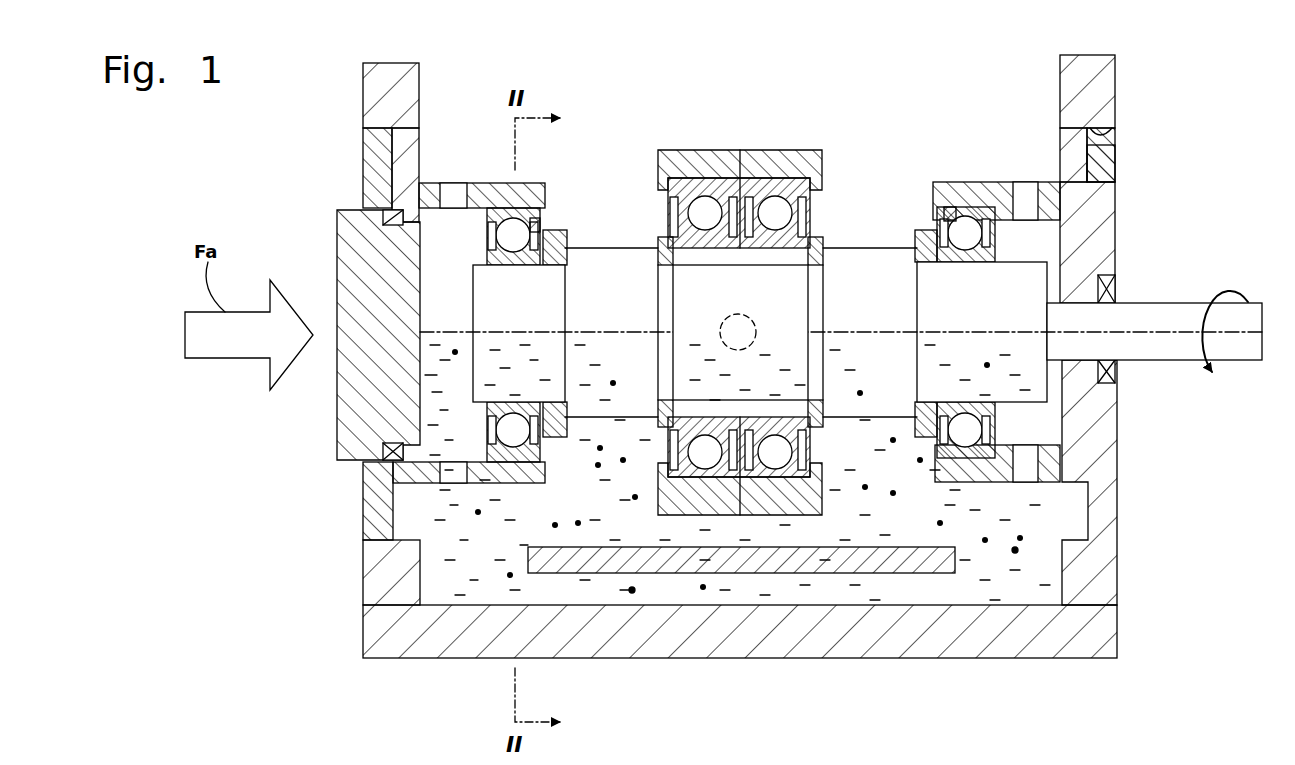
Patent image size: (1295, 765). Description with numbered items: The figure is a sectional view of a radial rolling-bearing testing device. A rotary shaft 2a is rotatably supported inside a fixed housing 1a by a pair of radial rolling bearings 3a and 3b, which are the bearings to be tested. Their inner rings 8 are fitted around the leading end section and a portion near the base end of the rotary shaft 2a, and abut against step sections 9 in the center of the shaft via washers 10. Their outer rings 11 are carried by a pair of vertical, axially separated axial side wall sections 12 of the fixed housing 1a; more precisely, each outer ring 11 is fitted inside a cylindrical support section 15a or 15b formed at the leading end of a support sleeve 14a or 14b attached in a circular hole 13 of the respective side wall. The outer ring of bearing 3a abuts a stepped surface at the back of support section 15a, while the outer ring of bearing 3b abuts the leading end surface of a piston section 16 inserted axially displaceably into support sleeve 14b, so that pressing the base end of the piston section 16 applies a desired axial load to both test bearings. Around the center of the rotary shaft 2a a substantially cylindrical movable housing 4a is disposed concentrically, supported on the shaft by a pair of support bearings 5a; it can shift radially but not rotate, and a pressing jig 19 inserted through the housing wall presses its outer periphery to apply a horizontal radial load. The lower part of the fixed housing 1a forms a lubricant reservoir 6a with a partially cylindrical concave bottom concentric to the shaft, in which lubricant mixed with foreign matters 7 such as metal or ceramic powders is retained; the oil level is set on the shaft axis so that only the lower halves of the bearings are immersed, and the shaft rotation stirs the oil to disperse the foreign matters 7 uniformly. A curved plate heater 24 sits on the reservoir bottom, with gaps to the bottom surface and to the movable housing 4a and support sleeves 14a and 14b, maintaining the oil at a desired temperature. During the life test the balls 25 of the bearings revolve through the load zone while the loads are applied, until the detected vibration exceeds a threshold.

The fixed housing 1a is at (430, 78).
The rotary shaft 2a is at (1180, 348).
The radial rolling bearing 3a is at (1000, 234).
The radial rolling bearing 3b is at (545, 205).
The movable housing 4a is at (740, 160).
The support bearing 5a is at (768, 492).
The lubricant reservoir 6a is at (1025, 595).
The foreign matters 7 is at (632, 590).
The inner ring 8 is at (487, 410).
The step section 9 is at (550, 435).
The washer 10 is at (555, 245).
The outer ring 11 is at (505, 455).
The axial side wall section 12 is at (383, 82).
The circular hole 13 is at (375, 140).
The support sleeve 14a is at (1105, 168).
The support sleeve 14b is at (365, 500).
The support section 15a is at (972, 212).
The support section 15b is at (537, 228).
The piston section 16 is at (355, 410).
The pressing jig 19 is at (758, 324).
The heater 24 is at (845, 565).
The ball 25 is at (515, 235).